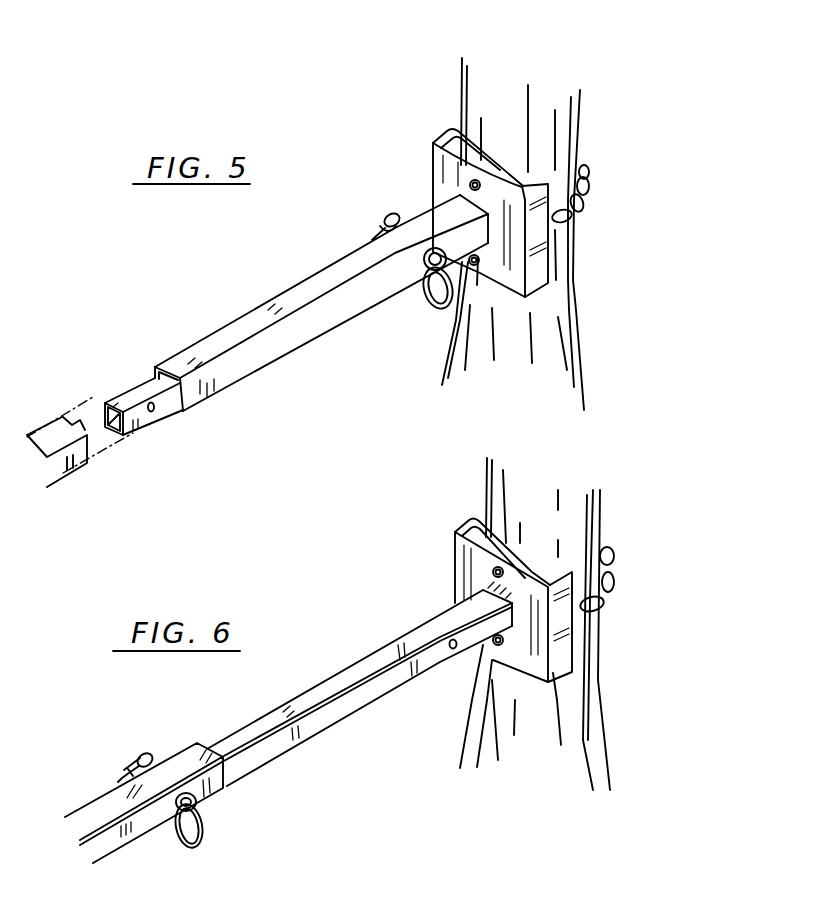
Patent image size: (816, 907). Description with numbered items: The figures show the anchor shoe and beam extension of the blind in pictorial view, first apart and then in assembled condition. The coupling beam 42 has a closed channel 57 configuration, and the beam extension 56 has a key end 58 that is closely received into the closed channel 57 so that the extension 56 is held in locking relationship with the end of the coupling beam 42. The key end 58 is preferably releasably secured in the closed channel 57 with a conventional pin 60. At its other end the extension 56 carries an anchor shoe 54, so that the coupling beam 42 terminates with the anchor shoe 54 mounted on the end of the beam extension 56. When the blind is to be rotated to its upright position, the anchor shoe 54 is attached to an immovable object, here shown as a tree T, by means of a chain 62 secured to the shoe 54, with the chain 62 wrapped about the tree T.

In FIG. 5, the tree T is at (573, 143).
In FIG. 6, the tree T is at (600, 510).
In FIG. 5, the coupling beam 42 is at (66, 478).
In FIG. 6, the coupling beam 42 is at (173, 757).
In FIG. 5, the anchor shoe 54 is at (442, 167).
In FIG. 6, the anchor shoe 54 is at (540, 658).
In FIG. 5, the beam extension 56 is at (305, 345).
In FIG. 6, the beam extension 56 is at (330, 725).
In FIG. 5, the closed channel 57 is at (93, 436).
In FIG. 5, the key end 58 is at (165, 415).
In FIG. 6, the pin 60 is at (205, 823).
In FIG. 5, the chain 62 is at (587, 195).
In FIG. 6, the chain 62 is at (607, 586).